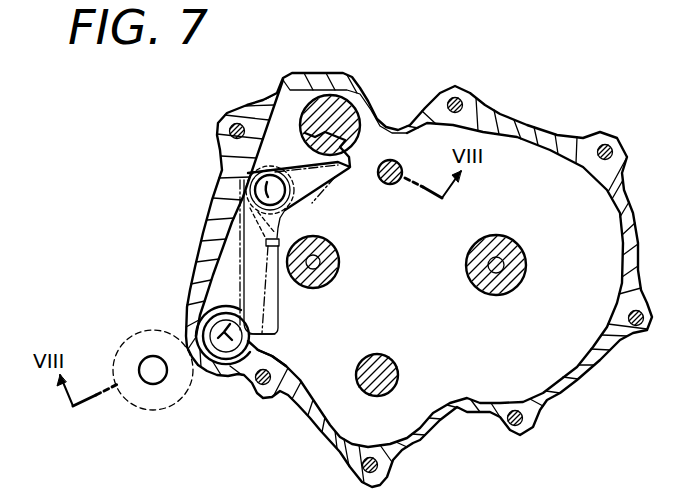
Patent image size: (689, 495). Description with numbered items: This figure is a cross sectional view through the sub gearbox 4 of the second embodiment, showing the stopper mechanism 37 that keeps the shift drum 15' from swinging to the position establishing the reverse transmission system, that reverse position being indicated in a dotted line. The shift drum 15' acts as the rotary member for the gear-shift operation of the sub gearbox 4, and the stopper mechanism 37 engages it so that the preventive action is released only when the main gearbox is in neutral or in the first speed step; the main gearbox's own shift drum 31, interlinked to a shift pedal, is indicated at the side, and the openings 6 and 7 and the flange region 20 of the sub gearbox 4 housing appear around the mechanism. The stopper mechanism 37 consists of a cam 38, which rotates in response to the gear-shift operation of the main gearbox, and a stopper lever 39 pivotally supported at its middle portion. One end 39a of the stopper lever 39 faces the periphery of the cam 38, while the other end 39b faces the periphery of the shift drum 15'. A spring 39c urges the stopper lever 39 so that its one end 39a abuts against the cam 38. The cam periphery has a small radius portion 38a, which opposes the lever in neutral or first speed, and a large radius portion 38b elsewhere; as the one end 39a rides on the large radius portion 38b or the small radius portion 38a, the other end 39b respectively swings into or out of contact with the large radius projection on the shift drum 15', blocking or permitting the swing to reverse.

The sub gearbox 4 is at (262, 98).
The shift drum 15' is at (350, 104).
The cover flange 20 is at (392, 128).
The bearing bore 6 is at (337, 263).
The bearing bore 7 is at (520, 265).
The shift drum 31 is at (139, 410).
The stopper mechanism 37 is at (237, 237).
The cam 38 is at (224, 358).
The small radius portion 38a is at (205, 317).
The large radius portion 38b is at (262, 352).
The stopper lever 39 is at (252, 256).
The one end of stopper lever 39a is at (272, 318).
The other end of stopper lever 39b is at (350, 176).
The spring 39c is at (283, 242).